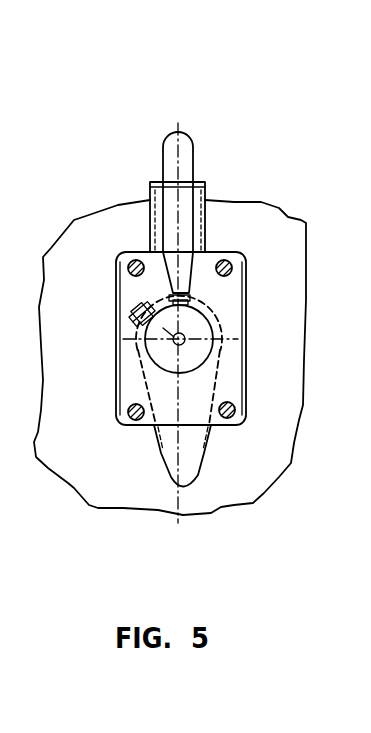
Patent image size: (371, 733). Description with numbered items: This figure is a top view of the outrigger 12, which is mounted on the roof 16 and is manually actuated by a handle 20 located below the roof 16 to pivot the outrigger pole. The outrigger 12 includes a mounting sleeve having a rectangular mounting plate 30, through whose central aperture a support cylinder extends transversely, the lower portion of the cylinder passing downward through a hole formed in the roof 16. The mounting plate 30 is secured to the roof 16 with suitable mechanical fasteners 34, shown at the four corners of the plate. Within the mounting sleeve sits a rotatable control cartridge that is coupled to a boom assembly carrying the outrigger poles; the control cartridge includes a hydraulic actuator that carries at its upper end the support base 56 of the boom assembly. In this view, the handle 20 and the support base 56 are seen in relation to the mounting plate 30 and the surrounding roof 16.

The outrigger 12 is at (131, 133).
The roof 16 is at (258, 200).
The handle 20 is at (177, 135).
The mounting plate 30 is at (137, 252).
The mechanical fasteners 34 is at (233, 418).
The support base 56 is at (192, 475).